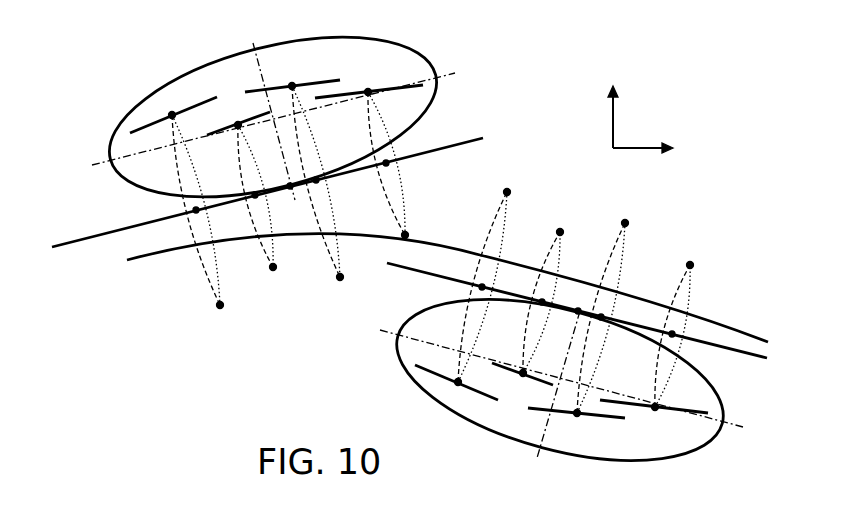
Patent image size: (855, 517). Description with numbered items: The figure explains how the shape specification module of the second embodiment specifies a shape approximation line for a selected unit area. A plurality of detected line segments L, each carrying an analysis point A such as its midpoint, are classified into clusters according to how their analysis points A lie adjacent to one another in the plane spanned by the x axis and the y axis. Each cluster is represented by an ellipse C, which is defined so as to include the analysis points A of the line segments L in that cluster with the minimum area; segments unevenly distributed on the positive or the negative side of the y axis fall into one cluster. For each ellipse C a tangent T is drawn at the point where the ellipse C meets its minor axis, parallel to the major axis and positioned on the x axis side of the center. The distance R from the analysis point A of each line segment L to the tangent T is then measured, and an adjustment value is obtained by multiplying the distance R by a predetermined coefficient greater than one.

The ellipse C is at (157, 90).
The tangent T is at (77, 238).
The line segment L is at (198, 100).
The analysis point A is at (410, 251).
The distance R is at (433, 249).
The x-axis x is at (651, 149).
The y-axis y is at (604, 117).